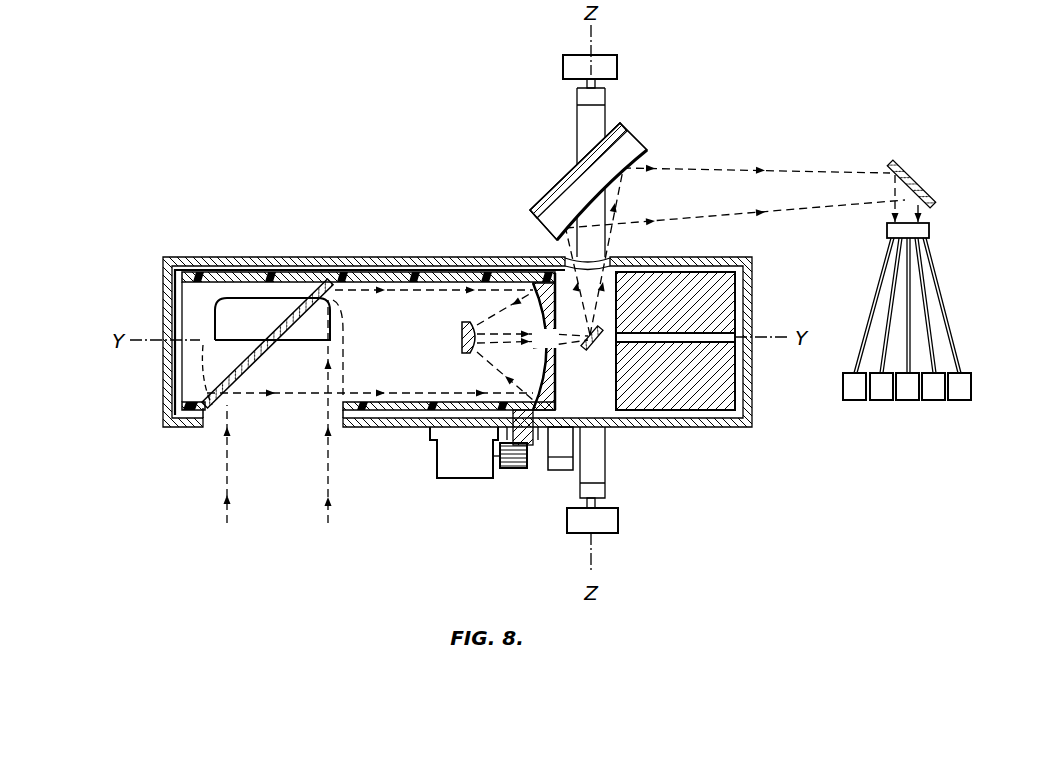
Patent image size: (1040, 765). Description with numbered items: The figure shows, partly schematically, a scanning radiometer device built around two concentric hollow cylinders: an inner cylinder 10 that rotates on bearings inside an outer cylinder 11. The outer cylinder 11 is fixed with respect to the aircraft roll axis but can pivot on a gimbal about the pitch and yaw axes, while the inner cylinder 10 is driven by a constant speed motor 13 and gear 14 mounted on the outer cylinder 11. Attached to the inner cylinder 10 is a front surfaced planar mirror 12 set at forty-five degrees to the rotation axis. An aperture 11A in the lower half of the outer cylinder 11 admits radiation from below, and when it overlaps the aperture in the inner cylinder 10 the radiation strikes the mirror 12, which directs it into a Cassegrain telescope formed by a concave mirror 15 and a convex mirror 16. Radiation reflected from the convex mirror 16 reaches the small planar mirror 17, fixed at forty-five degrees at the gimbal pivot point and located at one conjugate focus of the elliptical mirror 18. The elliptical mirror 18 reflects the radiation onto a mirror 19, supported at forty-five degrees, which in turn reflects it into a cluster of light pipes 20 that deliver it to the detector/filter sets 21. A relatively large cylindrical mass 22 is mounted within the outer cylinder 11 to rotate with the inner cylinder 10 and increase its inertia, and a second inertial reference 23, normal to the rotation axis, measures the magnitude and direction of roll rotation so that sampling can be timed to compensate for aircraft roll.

The inner cylinder 10 is at (383, 276).
The outer cylinder 11 is at (317, 257).
The aperture 11A is at (225, 416).
The planar mirror 12 is at (272, 332).
The constant speed motor 13 is at (452, 476).
The gear 14 is at (509, 470).
The concave mirror 15 is at (548, 394).
The convex mirror 16 is at (462, 338).
The small planar mirror 17 is at (590, 347).
The elliptical mirror 18 is at (632, 146).
The mirror 19 is at (913, 182).
The light pipes 20 is at (929, 231).
The detector/filter sets 21 is at (962, 387).
The cylindrical mass 22 is at (688, 398).
The inertial reference 23 is at (557, 470).